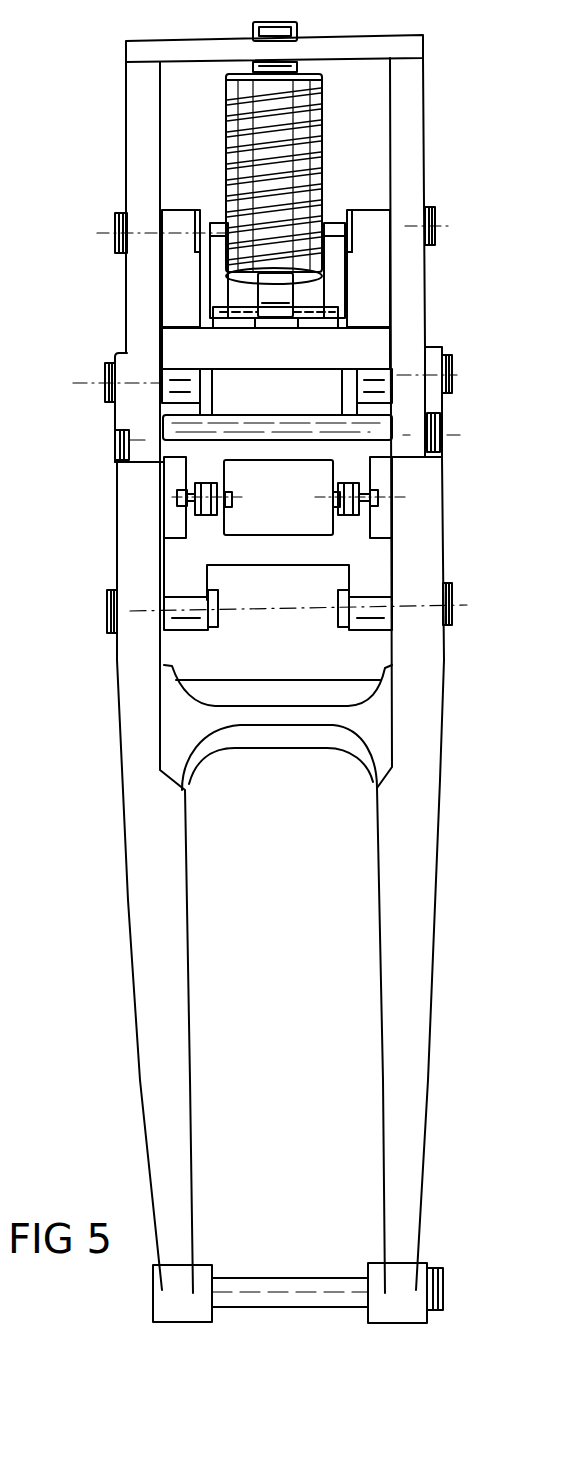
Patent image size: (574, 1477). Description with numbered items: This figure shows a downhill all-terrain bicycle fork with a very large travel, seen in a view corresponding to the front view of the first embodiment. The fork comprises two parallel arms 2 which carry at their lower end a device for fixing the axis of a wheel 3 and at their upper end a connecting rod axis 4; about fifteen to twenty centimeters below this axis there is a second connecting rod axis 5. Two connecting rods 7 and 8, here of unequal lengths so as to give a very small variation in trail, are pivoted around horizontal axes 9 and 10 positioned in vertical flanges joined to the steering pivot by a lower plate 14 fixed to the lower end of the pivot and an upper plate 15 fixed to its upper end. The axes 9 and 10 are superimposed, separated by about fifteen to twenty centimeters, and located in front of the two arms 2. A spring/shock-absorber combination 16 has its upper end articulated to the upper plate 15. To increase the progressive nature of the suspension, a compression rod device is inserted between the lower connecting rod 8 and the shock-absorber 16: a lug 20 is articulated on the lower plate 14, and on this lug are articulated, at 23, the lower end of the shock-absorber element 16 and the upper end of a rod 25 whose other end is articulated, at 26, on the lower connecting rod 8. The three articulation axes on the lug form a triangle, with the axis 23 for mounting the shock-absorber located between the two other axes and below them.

The parallel arms 2 is at (168, 1038).
The wheel axis fixing device 3 is at (172, 1298).
The connecting rod axis 4 is at (103, 402).
The second connecting rod axis 5 is at (110, 635).
The upper connecting rod 7 is at (175, 285).
The lower connecting rod 8 is at (202, 540).
The horizontal axis 9 is at (435, 227).
The horizontal axis 10 is at (113, 442).
The lower plate 14 is at (217, 345).
The upper plate 15 is at (348, 50).
The spring/shock-absorber combination 16 is at (297, 146).
The lug 20 is at (248, 284).
The articulation axis 23 is at (278, 310).
The rod 25 is at (207, 385).
The articulation axis 26 is at (193, 507).